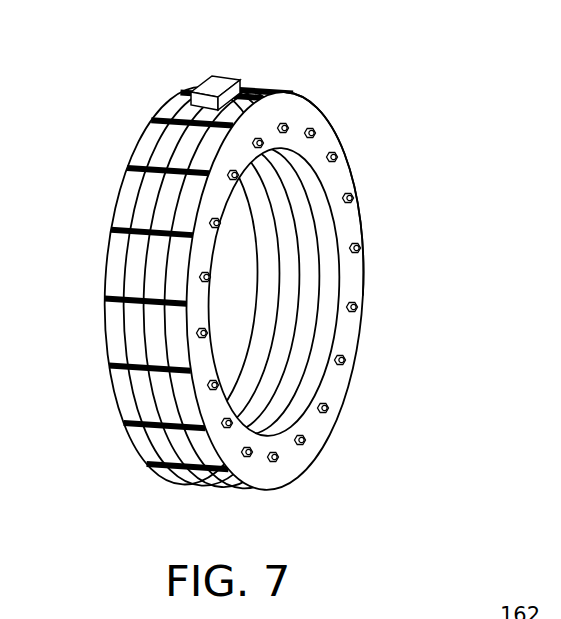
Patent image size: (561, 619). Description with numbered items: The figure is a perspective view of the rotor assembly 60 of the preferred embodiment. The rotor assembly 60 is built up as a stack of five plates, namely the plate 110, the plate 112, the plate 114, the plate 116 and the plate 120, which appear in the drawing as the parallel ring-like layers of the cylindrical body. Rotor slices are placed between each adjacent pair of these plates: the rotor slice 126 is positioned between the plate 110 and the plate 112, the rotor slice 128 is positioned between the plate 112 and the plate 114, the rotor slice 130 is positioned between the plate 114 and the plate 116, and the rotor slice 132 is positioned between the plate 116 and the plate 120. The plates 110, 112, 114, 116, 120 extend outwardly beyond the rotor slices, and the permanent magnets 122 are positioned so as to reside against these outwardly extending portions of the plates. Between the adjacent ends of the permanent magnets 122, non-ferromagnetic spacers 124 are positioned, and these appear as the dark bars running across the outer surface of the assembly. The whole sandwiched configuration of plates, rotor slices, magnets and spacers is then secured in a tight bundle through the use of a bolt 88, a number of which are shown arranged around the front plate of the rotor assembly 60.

The rotor assembly 60 is at (416, 212).
The bolt 88 is at (330, 157).
The plate 110 is at (357, 177).
The plate 112 is at (268, 92).
The plate 114 is at (178, 151).
The plate 116 is at (118, 218).
The plate 120 is at (104, 340).
The permanent magnet 122 is at (226, 76).
The non-ferromagnetic spacer 124 is at (103, 309).
The rotor slice 126 is at (330, 281).
The rotor slice 128 is at (305, 330).
The rotor slice 130 is at (275, 363).
The rotor slice 132 is at (257, 347).